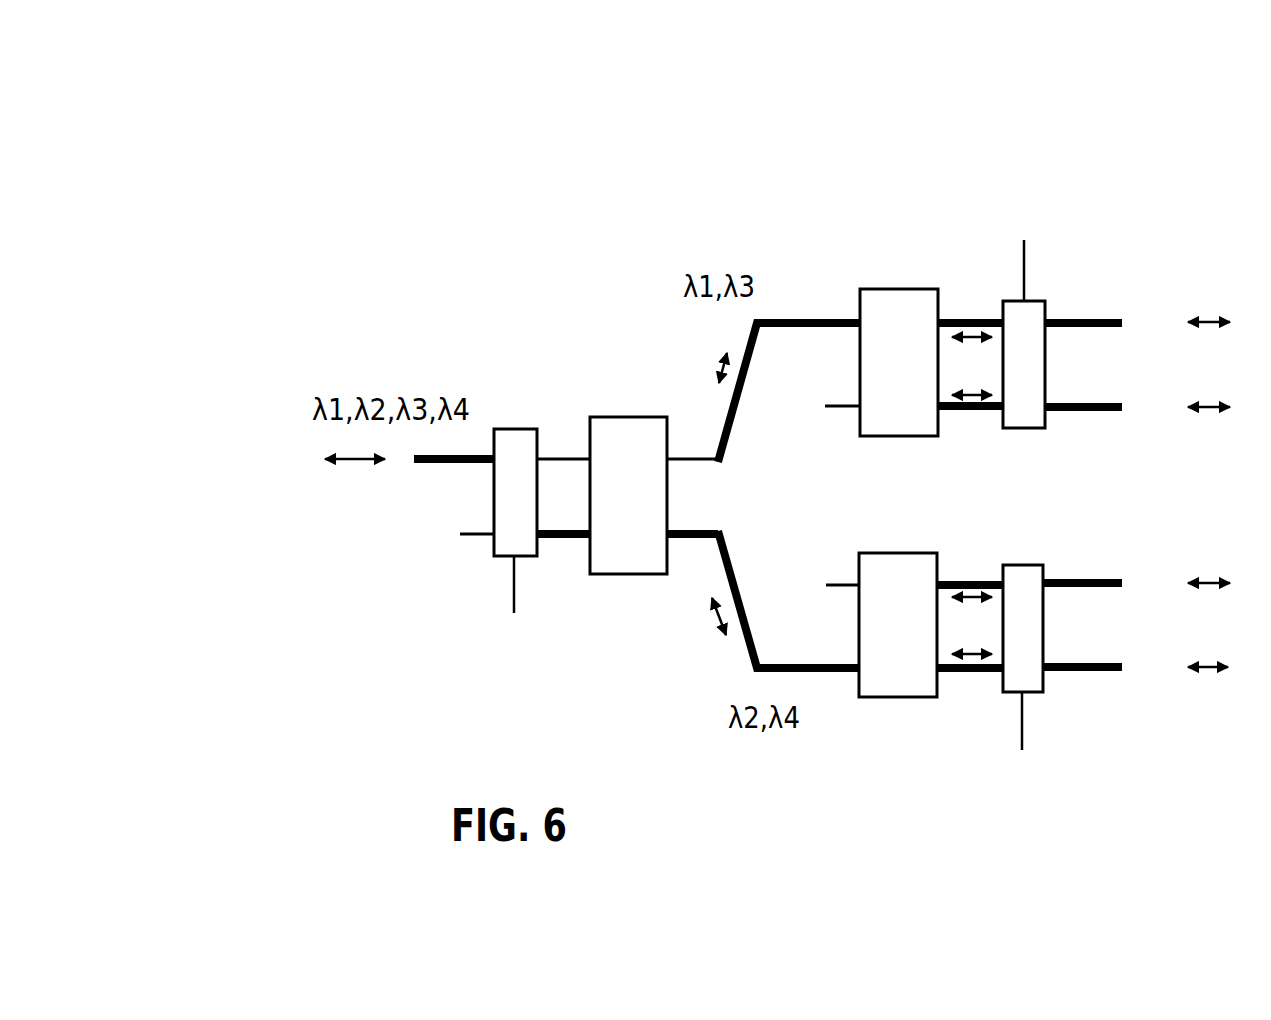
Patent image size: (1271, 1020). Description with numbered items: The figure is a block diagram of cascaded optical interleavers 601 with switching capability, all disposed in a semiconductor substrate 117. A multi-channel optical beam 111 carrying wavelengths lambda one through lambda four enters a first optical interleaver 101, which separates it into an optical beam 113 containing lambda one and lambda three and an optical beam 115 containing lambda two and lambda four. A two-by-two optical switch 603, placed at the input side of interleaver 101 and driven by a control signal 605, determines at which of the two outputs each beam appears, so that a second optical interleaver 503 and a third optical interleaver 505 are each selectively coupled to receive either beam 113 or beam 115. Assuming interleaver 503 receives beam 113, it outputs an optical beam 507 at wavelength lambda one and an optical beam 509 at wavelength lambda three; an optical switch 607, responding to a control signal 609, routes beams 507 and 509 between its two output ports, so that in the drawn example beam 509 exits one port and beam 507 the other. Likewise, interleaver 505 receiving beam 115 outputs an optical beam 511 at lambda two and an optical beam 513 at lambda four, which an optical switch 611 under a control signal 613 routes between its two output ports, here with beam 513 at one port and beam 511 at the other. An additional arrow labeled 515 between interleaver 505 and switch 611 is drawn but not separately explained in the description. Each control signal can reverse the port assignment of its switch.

The optical interleaver 101 is at (638, 577).
The multi-channel optical beam 111 is at (358, 470).
The optical beam 113 is at (712, 372).
The optical beam 115 is at (727, 633).
The semiconductor substrate 117 is at (576, 134).
The optical interleaver 503 is at (883, 288).
The optical interleaver 505 is at (907, 699).
The optical beam 507 is at (1207, 410).
The optical beam 509 is at (1222, 300).
The optical beam 511 is at (1207, 670).
The optical beam 513 is at (1205, 582).
The optical beam of wavelength lambda 4 in second interleaver 515 is at (972, 641).
The cascaded optical interleavers 601 is at (1062, 118).
The optical switch 603 is at (492, 557).
The control signal 605 is at (500, 652).
The optical switch 607 is at (1040, 292).
The control signal 609 is at (1052, 203).
The optical switch 611 is at (1045, 692).
The control signal 613 is at (1077, 770).